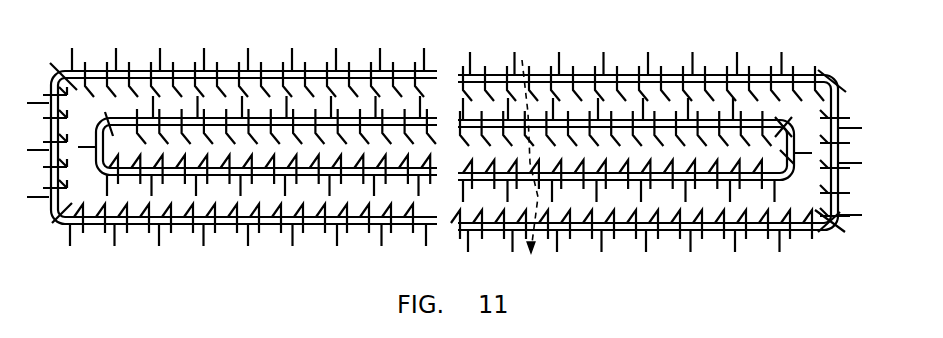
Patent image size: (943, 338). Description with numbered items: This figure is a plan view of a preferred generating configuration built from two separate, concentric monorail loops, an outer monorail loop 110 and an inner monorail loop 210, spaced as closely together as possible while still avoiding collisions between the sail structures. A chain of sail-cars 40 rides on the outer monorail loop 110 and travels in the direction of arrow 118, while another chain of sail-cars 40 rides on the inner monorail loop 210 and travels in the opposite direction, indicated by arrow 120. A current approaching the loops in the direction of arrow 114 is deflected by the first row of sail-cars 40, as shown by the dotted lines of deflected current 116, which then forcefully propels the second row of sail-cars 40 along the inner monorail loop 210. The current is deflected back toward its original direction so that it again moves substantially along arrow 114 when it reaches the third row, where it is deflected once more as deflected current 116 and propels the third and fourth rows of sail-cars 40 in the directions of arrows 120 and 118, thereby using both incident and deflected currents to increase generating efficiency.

The sail-cars 40 is at (240, 67).
The outer monorail loop 110 is at (714, 70).
The arrow indicating current direction 114 is at (553, 37).
The deflected current 116 is at (531, 37).
The arrow indicating direction of travel on outer loop 118 is at (495, 62).
The arrow indicating direction of travel on inner loop 120 is at (553, 107).
The inner monorail loop 210 is at (807, 92).